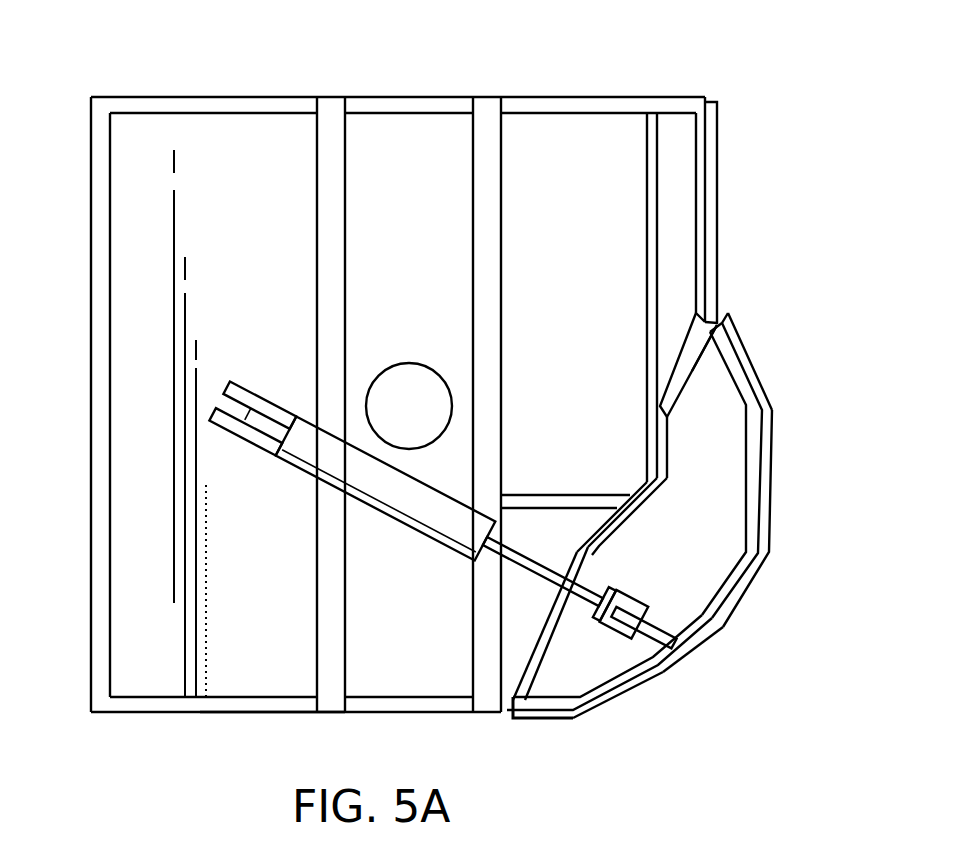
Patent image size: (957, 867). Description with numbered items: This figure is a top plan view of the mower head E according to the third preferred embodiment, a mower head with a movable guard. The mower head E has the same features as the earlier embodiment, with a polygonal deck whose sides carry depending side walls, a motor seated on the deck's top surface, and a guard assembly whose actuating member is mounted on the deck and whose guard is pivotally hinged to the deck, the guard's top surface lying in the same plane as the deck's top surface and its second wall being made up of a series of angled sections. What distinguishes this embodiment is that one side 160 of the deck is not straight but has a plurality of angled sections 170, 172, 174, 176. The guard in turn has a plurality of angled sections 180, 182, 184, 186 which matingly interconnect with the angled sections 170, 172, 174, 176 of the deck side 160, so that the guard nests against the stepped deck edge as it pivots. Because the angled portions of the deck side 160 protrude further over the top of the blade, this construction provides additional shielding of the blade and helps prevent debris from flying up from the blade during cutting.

The mower head E is at (744, 72).
The side 160 is at (648, 398).
The angled section 170 is at (680, 353).
The angled section 172 is at (652, 450).
The angled section 174 is at (624, 496).
The angled section 176 is at (535, 648).
The angled section 180 is at (688, 372).
The angled section 182 is at (668, 462).
The angled section 184 is at (637, 511).
The angled section 186 is at (548, 650).